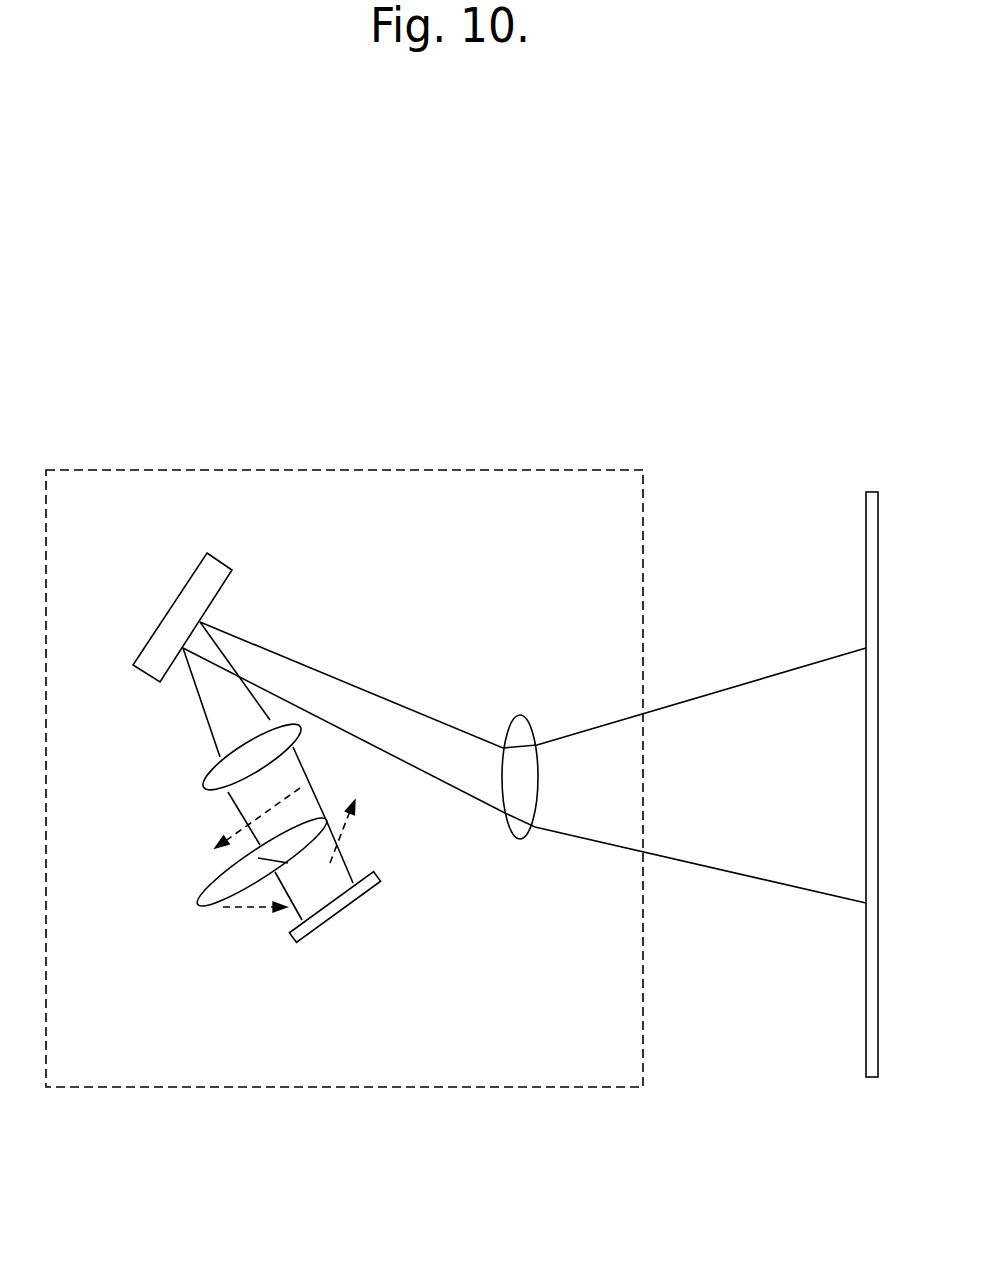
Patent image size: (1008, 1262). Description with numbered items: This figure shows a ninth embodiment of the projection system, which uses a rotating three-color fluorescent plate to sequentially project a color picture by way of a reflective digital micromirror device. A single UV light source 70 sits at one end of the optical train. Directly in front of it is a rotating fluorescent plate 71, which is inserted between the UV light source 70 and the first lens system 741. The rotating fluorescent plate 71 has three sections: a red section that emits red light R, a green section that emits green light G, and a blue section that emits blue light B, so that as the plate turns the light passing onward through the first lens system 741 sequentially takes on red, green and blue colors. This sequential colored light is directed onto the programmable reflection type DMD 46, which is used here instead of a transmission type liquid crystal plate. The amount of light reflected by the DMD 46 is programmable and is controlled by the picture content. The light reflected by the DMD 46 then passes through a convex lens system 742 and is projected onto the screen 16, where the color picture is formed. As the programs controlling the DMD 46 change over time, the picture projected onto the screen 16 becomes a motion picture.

The screen 16 is at (858, 578).
The reflection type DMD 46 is at (207, 588).
The UV light source 70 is at (345, 913).
The rotating fluorescent plate 71 is at (202, 910).
The first lens system 741 is at (208, 785).
The convex lens system 742 is at (519, 737).
The blue light B is at (280, 804).
The green light G is at (329, 844).
The red light R is at (229, 901).